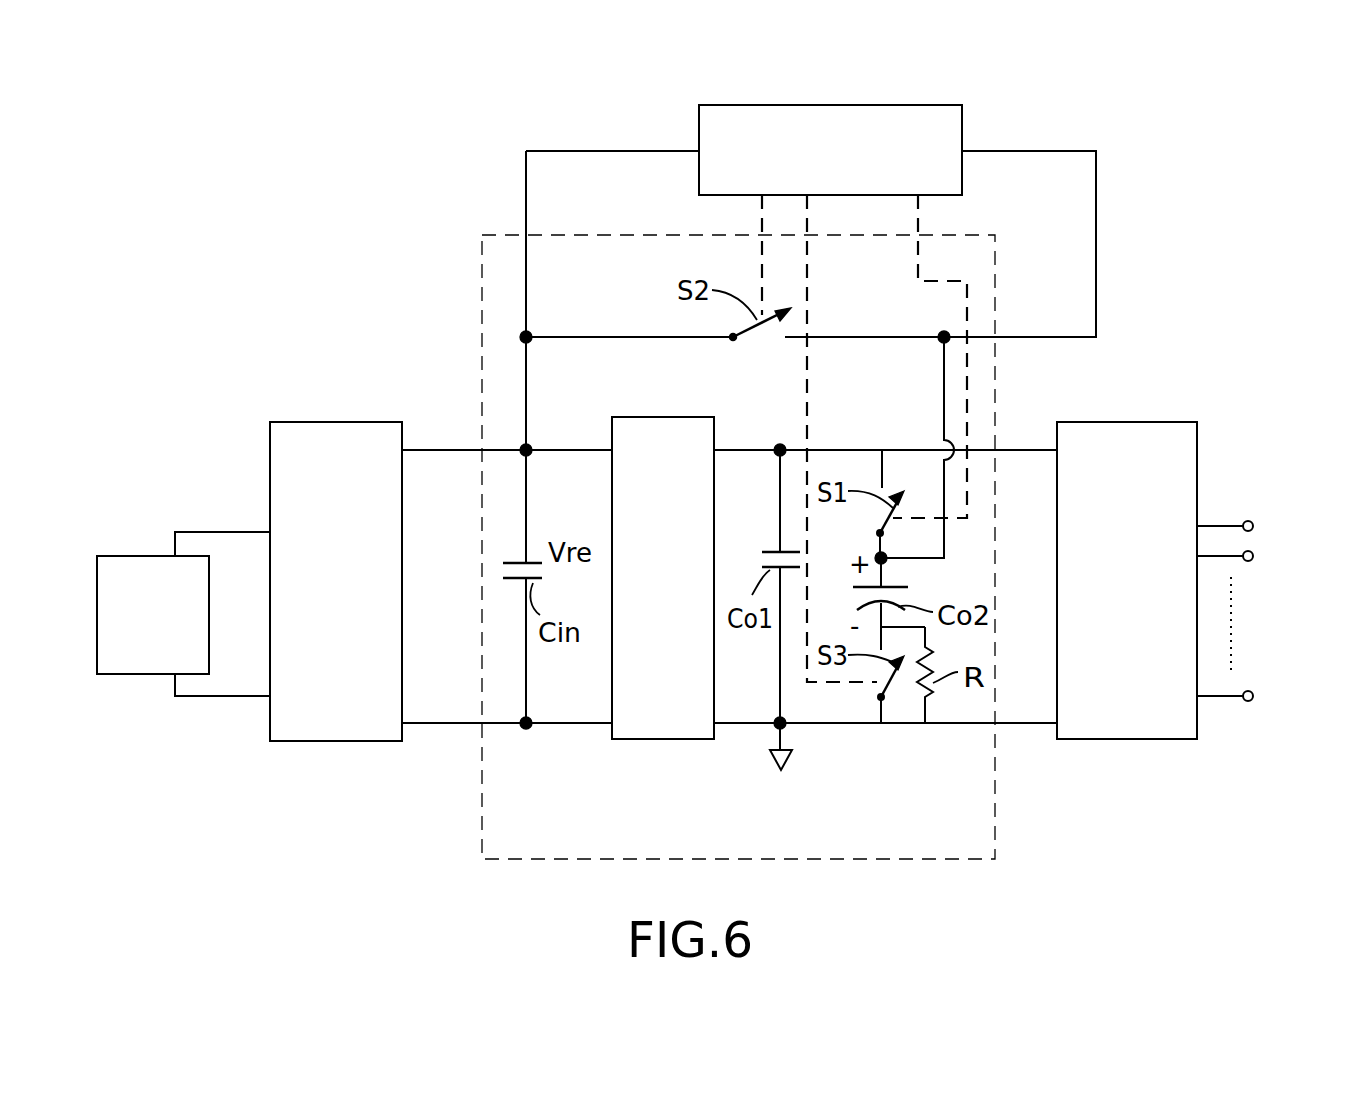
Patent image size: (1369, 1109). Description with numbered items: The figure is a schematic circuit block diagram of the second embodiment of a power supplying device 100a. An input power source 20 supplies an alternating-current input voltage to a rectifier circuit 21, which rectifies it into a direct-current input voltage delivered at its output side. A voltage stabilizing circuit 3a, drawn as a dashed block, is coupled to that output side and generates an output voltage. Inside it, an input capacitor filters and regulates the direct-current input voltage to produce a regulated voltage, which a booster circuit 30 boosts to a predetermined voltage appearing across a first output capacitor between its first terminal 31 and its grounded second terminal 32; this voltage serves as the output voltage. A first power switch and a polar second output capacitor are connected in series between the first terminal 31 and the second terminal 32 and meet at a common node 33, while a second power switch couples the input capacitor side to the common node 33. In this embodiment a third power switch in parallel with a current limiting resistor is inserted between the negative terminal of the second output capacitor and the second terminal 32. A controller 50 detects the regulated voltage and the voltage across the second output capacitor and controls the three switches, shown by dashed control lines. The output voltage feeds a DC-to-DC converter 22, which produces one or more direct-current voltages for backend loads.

The input power source 20 is at (158, 555).
The rectifier circuit 21 is at (318, 421).
The DC-to-DC converter 22 is at (1143, 421).
The booster circuit 30 is at (665, 416).
The first terminal of the first output capacitor 31 is at (781, 444).
The grounded second terminal of the first output capacitor 32 is at (790, 728).
The common node 33 is at (890, 563).
The controller 50 is at (849, 185).
The voltage stabilizing circuit 3a is at (995, 260).
The power supplying device 100a is at (1147, 313).